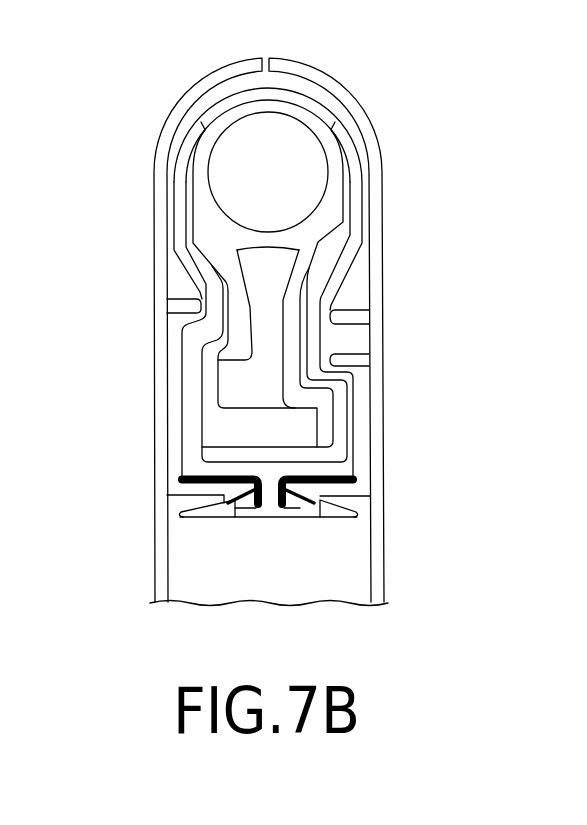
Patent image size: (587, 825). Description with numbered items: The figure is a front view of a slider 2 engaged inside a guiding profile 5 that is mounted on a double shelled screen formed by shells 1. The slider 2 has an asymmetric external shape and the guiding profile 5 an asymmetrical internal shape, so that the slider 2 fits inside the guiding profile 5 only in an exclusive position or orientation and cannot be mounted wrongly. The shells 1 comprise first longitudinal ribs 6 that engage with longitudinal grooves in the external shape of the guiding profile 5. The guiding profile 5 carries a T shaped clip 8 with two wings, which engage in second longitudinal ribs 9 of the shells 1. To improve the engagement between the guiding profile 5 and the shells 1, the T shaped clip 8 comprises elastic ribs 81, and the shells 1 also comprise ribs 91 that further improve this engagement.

The shells 1 is at (345, 97).
The slider 2 is at (332, 186).
The guiding profile 5 is at (346, 137).
The first longitudinal ribs 6 is at (185, 302).
The T shaped clip 8 is at (268, 512).
The second longitudinal ribs 9 is at (181, 488).
The elastic ribs 81 is at (178, 514).
The ribs 91 is at (233, 500).